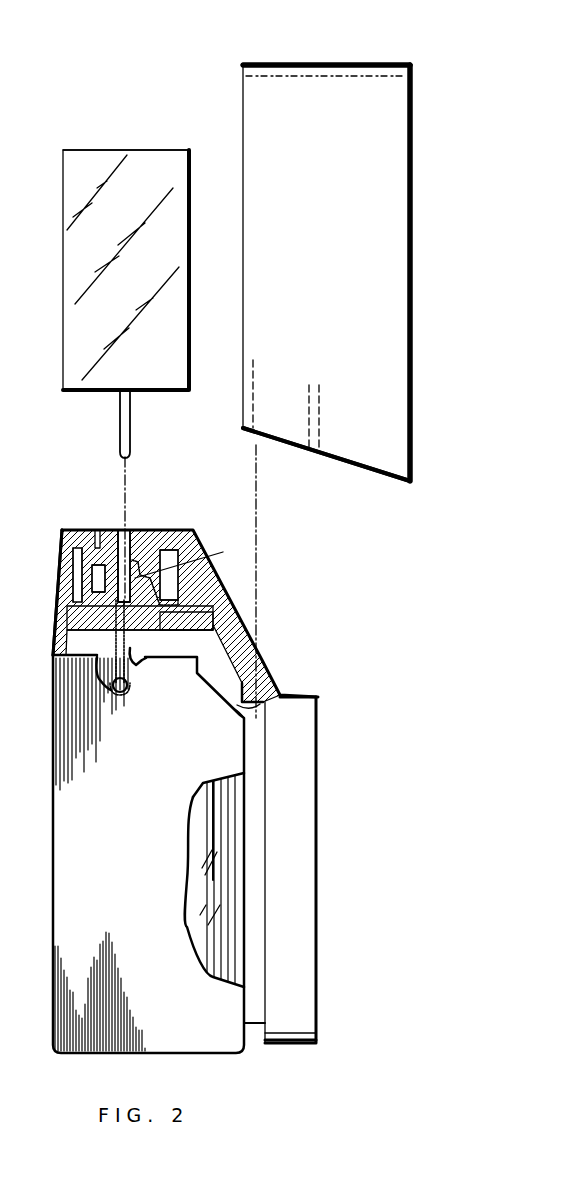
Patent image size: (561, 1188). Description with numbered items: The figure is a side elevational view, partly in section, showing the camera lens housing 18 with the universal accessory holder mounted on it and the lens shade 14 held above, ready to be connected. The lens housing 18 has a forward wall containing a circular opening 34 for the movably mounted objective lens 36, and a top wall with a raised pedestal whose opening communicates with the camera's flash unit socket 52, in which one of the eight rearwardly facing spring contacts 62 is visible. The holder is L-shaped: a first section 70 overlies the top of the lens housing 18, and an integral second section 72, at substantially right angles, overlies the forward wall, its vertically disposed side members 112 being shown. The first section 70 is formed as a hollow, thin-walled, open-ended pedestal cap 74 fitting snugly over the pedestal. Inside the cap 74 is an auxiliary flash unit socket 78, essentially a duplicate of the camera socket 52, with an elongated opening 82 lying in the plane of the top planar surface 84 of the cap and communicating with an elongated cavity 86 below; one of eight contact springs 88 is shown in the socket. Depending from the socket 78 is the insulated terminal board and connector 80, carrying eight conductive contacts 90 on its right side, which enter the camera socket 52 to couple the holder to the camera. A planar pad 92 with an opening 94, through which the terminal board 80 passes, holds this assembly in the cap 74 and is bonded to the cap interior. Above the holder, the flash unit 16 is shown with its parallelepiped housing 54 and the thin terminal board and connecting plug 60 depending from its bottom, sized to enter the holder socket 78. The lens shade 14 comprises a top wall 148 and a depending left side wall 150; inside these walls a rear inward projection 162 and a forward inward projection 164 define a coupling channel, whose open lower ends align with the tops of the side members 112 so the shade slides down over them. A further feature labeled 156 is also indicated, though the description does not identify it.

The lens shade 14 is at (241, 56).
The top wall 148 is at (335, 66).
The linear array flash unit 16 is at (59, 196).
The housing 54 is at (64, 150).
The terminal board and connecting plug 60 is at (120, 425).
The rear inward projection 162 is at (256, 382).
The forward inward projection 164 is at (320, 400).
The left side wall 150 is at (343, 440).
The side edge of panel 156 is at (377, 294).
The first section 70 is at (57, 526).
The top planar surface 84 is at (80, 530).
The elongated opening 82 is at (128, 540).
The elongated cavity 86 is at (163, 557).
The contact springs 88 is at (185, 556).
The pedestal cap 74 is at (58, 568).
The flash unit socket 78 is at (88, 590).
The opening 94 is at (100, 631).
The planar pad 92 is at (207, 628).
The flash unit socket 52 is at (124, 643).
The spring contacts 62 is at (140, 663).
The electrically conductive contacts 90 is at (129, 684).
The terminal board and connector 80 is at (124, 690).
The lens housing 18 is at (90, 1057).
The circular opening 34 is at (243, 773).
The objective lens 36 is at (197, 822).
The second section 72 is at (319, 838).
The side members 112 is at (283, 1027).